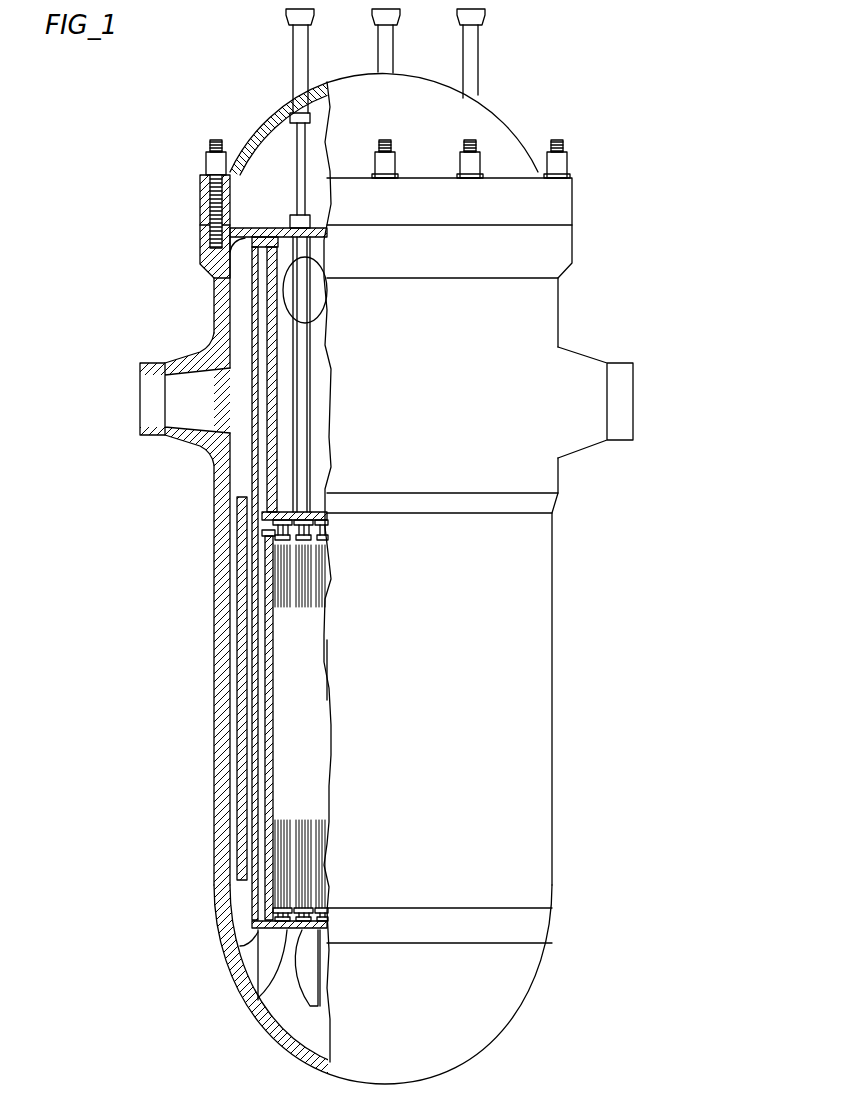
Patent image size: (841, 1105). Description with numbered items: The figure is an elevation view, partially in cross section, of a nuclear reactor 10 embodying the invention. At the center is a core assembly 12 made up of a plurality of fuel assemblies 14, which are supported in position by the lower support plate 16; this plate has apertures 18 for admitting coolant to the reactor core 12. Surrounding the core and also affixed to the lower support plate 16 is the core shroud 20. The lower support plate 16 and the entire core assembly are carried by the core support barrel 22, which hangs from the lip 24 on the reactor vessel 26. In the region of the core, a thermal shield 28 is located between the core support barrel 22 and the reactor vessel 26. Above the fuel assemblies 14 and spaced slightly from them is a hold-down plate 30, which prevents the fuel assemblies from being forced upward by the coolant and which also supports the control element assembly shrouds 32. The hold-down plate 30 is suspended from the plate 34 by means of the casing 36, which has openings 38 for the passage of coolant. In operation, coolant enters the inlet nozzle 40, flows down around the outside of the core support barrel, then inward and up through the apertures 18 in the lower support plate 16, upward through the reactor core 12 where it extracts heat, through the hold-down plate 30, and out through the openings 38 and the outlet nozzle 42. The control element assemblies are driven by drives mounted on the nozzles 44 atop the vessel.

The nuclear reactor 10 is at (628, 130).
The core assembly 12 is at (305, 673).
The fuel assemblies 14 is at (322, 585).
The lower support plate 16 is at (258, 952).
The apertures 18 is at (300, 932).
The core shroud 20 is at (268, 775).
The core support barrel 22 is at (255, 722).
The lip 24 is at (200, 265).
The reactor vessel 26 is at (218, 615).
The thermal shield 28 is at (240, 678).
The hold-down plate 30 is at (322, 505).
The control element assembly shrouds 32 is at (310, 396).
The plate 34 is at (322, 228).
The casing 36 is at (270, 335).
The openings 38 is at (318, 311).
The inlet nozzle 40 is at (150, 400).
The outlet nozzle 42 is at (620, 400).
The nozzles 44 is at (506, 48).